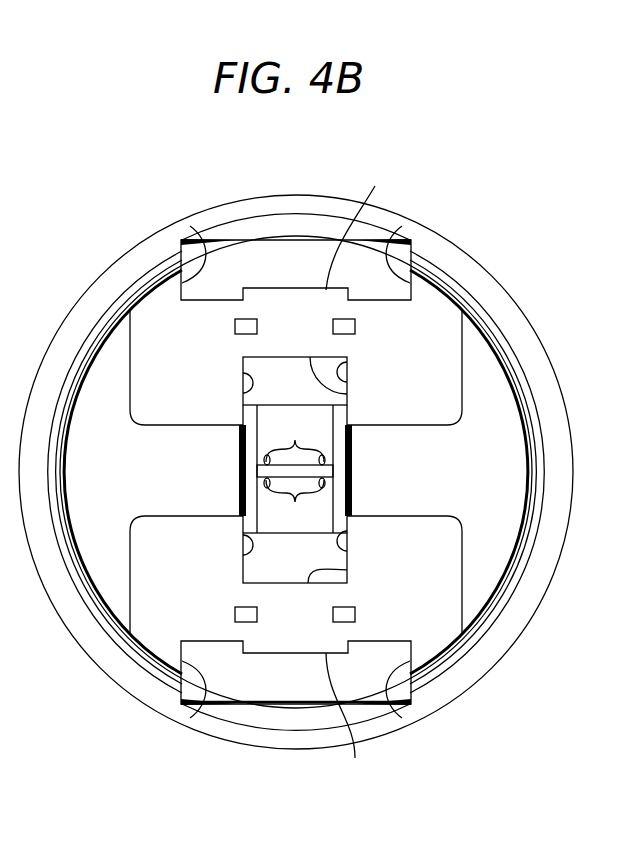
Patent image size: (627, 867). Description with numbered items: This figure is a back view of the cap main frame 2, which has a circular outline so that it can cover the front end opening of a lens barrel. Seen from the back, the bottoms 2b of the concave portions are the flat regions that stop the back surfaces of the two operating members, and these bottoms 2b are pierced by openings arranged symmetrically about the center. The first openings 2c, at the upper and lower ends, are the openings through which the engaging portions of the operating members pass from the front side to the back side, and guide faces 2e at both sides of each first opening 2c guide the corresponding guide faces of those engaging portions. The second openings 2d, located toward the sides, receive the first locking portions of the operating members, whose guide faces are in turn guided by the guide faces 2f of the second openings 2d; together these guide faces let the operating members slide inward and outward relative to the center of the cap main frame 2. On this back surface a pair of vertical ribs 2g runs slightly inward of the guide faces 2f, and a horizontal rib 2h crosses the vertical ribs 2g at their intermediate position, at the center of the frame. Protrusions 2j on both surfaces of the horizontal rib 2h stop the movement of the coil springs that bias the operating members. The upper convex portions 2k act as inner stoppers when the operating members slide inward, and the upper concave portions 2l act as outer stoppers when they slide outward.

The cap main frame 2 is at (488, 270).
The bottoms 2b is at (428, 338).
The first openings 2c is at (289, 252).
The second openings 2d is at (293, 372).
The guide faces 2e is at (190, 226).
The guide faces 2f is at (245, 377).
The vertical ribs 2g is at (240, 455).
The horizontal rib 2h is at (323, 470).
The protrusions 2j is at (294, 469).
The upper convex portions 2k is at (364, 473).
The upper concave portions 2l is at (347, 396).